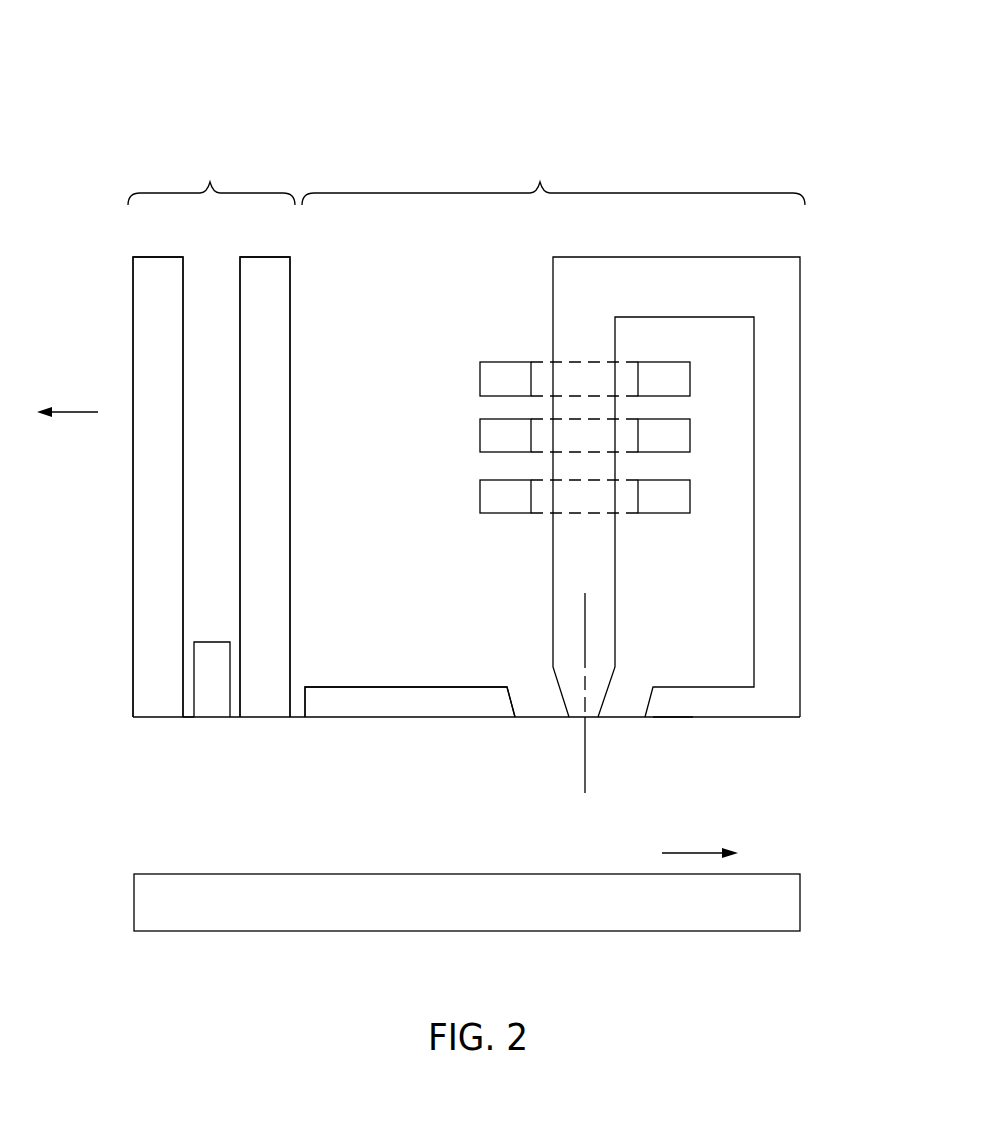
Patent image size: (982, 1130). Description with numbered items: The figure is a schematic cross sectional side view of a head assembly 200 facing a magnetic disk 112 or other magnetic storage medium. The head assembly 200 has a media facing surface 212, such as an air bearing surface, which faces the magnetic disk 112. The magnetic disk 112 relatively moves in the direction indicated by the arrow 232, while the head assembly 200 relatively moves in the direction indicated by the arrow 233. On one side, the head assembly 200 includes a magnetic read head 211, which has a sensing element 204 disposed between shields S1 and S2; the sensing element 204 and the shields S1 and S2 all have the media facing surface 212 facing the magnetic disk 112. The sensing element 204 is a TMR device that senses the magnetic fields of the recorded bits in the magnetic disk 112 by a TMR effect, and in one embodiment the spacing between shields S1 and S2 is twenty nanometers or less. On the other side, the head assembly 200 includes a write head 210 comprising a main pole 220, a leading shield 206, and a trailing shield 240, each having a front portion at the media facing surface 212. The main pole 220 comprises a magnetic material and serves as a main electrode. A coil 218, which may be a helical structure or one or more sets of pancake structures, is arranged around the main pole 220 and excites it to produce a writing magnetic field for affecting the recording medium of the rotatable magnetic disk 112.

The head assembly 200 is at (163, 78).
The magnetic read head 211 is at (211, 431).
The write head 210 is at (553, 431).
The arrow 233 is at (78, 412).
The shield S1 is at (153, 705).
The shield S2 is at (263, 705).
The sensing element 204 is at (217, 710).
The media facing surface 212 is at (200, 718).
The leading shield 206 is at (350, 718).
The trailing shield 240 is at (767, 703).
The main pole 220 is at (598, 548).
The coil 218 is at (497, 515).
The arrow 232 is at (692, 850).
The magnetic disk 112 is at (800, 900).